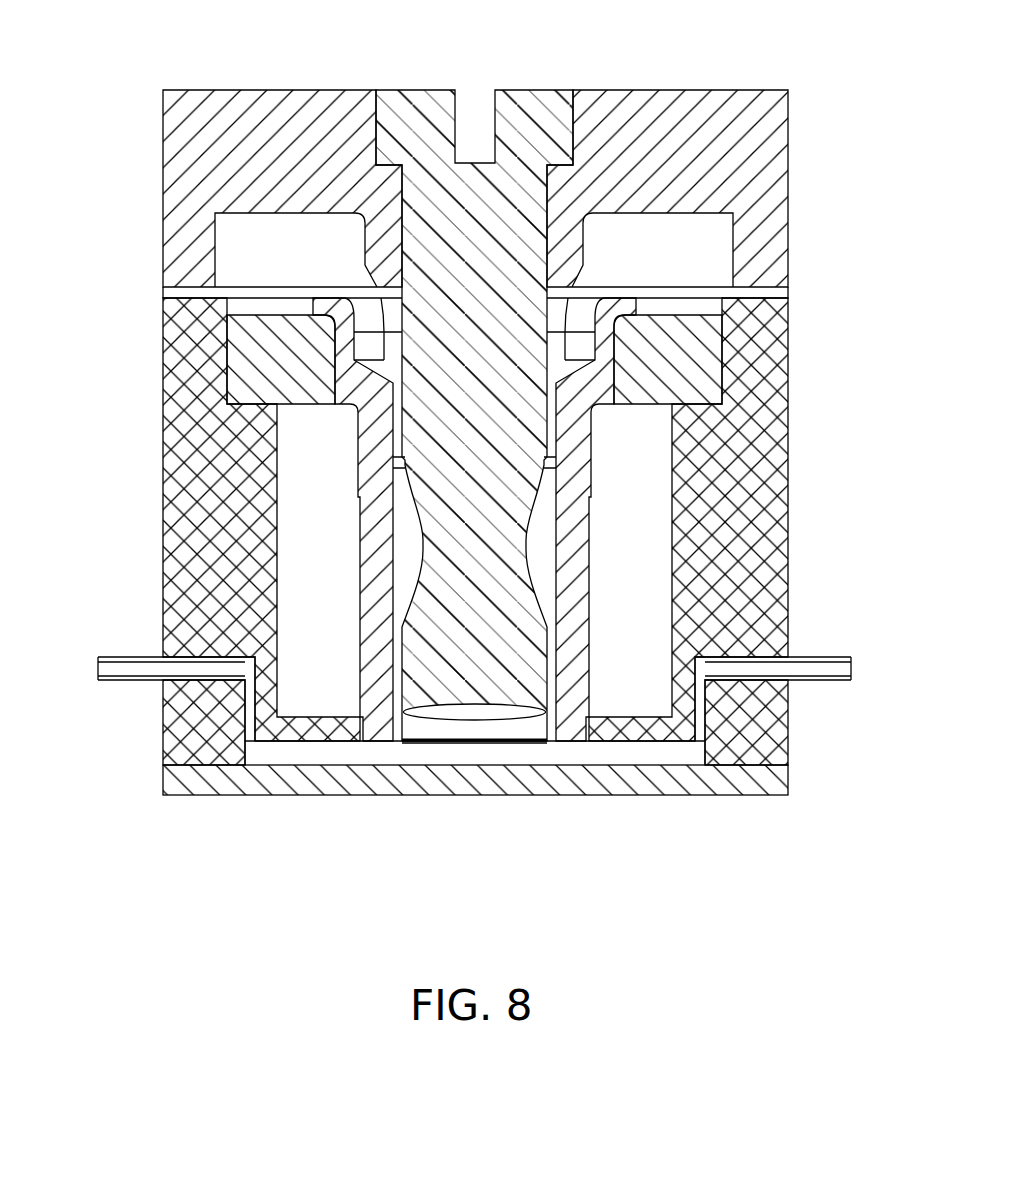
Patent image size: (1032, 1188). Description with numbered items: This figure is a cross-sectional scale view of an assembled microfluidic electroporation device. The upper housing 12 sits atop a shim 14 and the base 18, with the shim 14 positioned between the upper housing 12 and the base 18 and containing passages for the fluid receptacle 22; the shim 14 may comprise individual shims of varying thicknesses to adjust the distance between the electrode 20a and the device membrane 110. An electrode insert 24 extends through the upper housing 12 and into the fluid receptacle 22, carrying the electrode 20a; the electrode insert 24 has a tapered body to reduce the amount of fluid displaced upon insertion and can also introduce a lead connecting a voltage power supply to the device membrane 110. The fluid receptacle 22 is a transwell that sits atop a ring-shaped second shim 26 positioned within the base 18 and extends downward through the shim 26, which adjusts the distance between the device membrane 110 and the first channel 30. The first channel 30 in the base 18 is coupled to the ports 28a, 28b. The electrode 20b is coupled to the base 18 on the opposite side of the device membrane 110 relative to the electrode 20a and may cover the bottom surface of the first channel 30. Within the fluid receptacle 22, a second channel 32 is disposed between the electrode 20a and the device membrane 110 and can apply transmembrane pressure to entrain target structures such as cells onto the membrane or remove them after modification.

The upper housing 12 is at (749, 114).
The shim 14 is at (792, 297).
The base 18 is at (157, 485).
The electrode 20a is at (506, 697).
The electrode 20b is at (700, 806).
The fluid receptacle 22 is at (349, 383).
The electrode insert 24 is at (414, 106).
The second shim 26 is at (701, 378).
The port 28a is at (89, 667).
The port 28b is at (859, 667).
The first channel 30 is at (262, 748).
The second channel 32 is at (528, 735).
The device membrane 110 is at (440, 757).